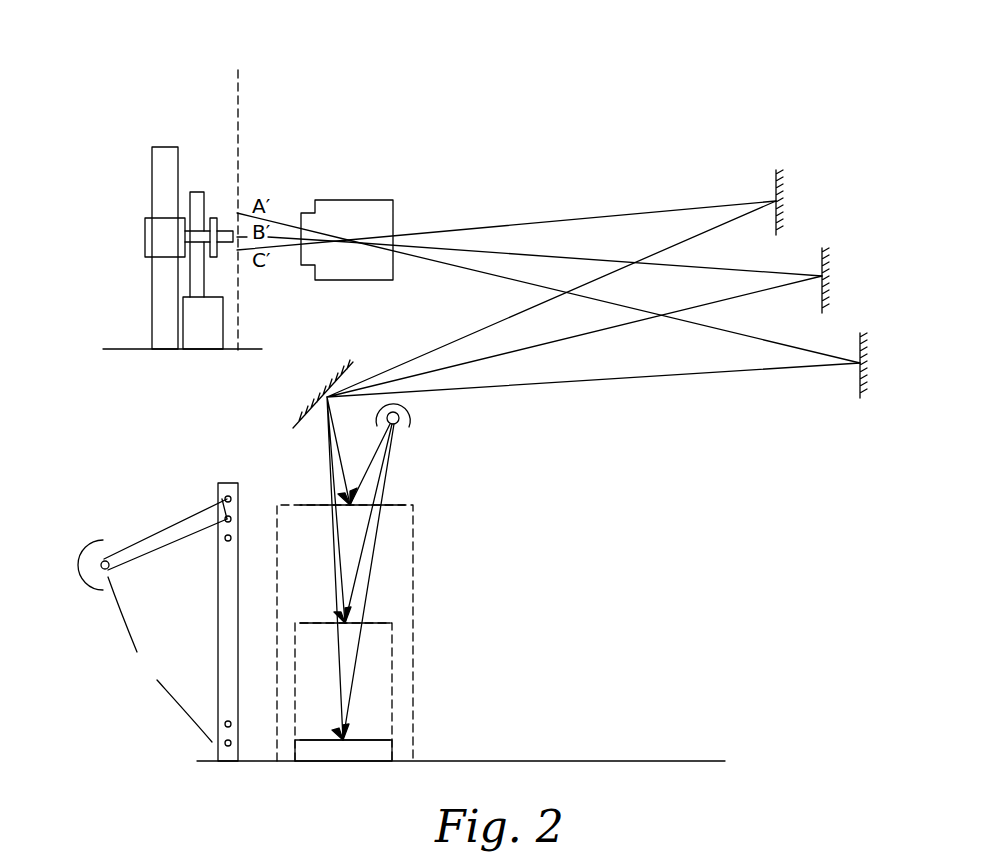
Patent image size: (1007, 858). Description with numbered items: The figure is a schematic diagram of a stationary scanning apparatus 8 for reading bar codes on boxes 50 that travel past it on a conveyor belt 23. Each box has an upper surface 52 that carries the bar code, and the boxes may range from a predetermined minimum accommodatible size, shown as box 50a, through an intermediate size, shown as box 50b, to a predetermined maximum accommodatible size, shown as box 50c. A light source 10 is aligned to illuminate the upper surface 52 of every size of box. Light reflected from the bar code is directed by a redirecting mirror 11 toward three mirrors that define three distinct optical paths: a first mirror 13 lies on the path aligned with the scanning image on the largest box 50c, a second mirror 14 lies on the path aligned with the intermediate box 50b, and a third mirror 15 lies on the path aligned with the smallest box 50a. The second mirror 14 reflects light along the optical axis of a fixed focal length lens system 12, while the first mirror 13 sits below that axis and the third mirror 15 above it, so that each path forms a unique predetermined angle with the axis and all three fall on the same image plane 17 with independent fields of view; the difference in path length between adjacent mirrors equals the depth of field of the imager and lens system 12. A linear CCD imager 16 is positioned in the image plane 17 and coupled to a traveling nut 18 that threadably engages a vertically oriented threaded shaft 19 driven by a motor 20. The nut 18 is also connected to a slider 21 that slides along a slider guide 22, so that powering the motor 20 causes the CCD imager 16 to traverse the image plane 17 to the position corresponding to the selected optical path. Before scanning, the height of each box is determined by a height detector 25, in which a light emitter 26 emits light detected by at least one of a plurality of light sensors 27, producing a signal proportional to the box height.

The scanning apparatus 8 is at (171, 251).
The light source 10 is at (413, 425).
The redirecting mirror 11 is at (325, 393).
The fixed focal length lens system 12 is at (372, 200).
The first mirror 13 is at (865, 358).
The second mirror 14 is at (828, 272).
The third mirror 15 is at (782, 192).
The linear CCD imager 16 is at (225, 230).
The image plane 17 is at (220, 85).
The traveling nut 18 is at (198, 240).
The threaded shaft 19 is at (205, 192).
The motor 20 is at (207, 330).
The slider 21 is at (145, 240).
The slider guide 22 is at (163, 147).
The conveyor belt 23 is at (537, 761).
The height detector 25 is at (215, 695).
The light emitter 26 is at (78, 558).
The light sensors 27 is at (215, 518).
The boxes 50 is at (463, 616).
The minimum size box 50a is at (403, 752).
The intermediate size box 50b is at (393, 660).
The maximum size box 50c is at (413, 558).
The upper surface 52 is at (405, 505).